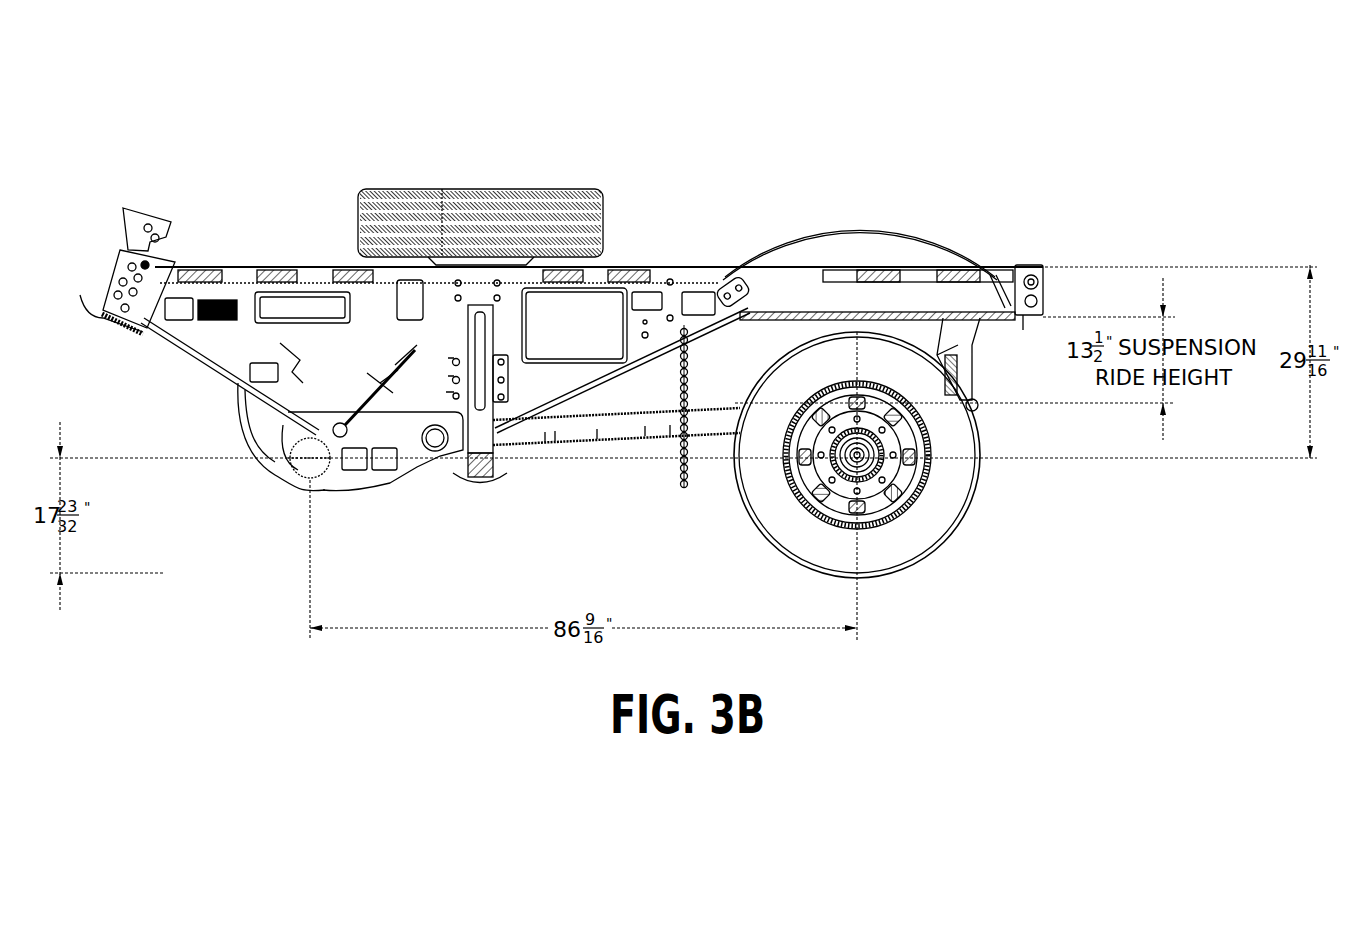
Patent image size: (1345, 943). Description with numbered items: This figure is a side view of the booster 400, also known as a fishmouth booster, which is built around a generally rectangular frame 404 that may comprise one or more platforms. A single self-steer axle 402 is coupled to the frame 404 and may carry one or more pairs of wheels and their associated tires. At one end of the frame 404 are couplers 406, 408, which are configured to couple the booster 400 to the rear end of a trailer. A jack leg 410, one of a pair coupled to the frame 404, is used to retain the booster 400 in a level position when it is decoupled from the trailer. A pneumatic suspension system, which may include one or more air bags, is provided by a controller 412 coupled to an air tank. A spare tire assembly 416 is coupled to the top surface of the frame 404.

The booster 400 is at (210, 97).
The self-steer axle 402 is at (860, 463).
The frame 404 is at (707, 286).
The coupler 406 is at (133, 253).
The coupler 408 is at (310, 462).
The jack leg 410 is at (497, 467).
The controller 412 is at (583, 353).
The spare tire assembly 416 is at (435, 193).